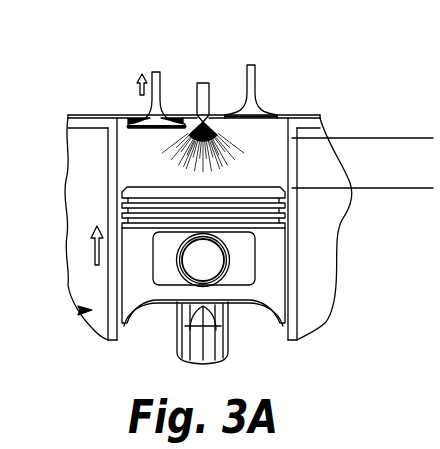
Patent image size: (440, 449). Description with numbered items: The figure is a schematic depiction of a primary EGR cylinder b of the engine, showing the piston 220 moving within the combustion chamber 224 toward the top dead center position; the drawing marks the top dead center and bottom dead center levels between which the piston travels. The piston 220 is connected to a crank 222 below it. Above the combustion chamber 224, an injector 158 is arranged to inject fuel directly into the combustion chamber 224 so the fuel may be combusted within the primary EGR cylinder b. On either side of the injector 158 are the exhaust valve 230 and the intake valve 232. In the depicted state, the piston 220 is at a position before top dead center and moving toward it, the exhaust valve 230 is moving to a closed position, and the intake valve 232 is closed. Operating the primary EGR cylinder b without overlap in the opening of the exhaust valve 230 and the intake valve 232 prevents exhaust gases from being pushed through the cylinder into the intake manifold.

The injector 158 is at (197, 90).
The piston 220 is at (273, 278).
The crank 222 is at (218, 337).
The combustion chamber 224 is at (133, 147).
The exhaust valve 230 is at (160, 90).
The intake valve 232 is at (255, 80).
The primary EGR cylinder b is at (80, 310).